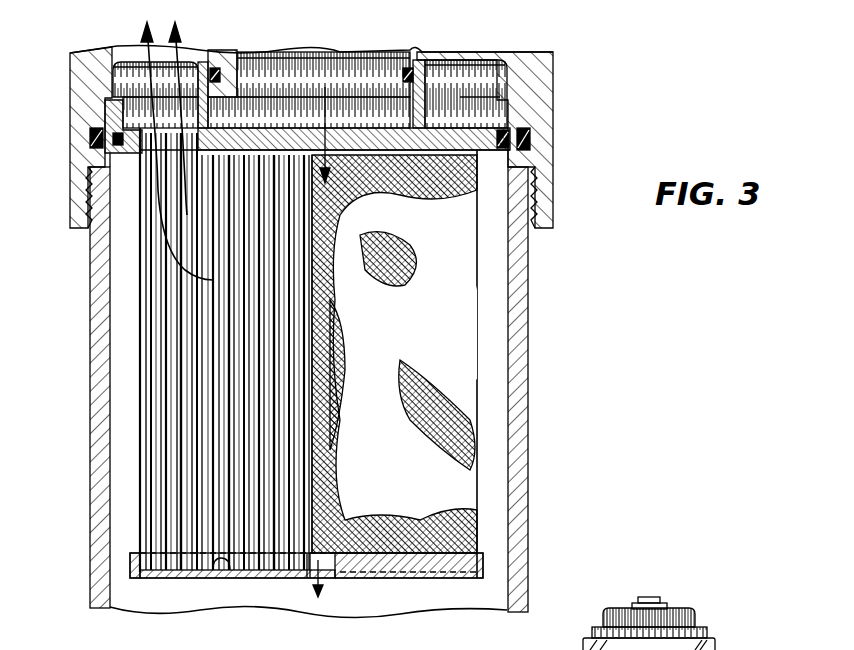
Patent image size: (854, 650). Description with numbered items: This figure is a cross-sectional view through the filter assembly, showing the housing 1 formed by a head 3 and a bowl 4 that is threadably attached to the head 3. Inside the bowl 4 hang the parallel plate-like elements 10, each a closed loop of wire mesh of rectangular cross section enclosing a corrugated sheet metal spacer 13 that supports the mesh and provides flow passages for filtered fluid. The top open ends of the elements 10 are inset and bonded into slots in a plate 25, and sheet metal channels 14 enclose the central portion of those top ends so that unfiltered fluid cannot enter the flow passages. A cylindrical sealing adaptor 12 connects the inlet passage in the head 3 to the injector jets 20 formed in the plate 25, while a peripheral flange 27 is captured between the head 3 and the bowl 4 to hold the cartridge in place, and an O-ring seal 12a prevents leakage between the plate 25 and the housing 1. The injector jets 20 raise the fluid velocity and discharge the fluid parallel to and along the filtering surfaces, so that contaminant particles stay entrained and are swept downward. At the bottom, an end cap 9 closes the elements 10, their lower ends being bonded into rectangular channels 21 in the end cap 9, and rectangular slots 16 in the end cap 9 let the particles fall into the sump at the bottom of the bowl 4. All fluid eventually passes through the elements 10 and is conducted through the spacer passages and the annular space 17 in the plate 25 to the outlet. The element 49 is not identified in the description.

The housing 1 is at (566, 128).
The head 3 is at (553, 59).
The bowl 4 is at (528, 379).
The end cap 9 is at (412, 572).
The plate-like element 10 is at (478, 308).
The cylindrical sealing adaptor 12 is at (428, 76).
The O-ring seal 12a is at (408, 72).
The corrugated sheet metal spacer 13 is at (155, 410).
The sheet metal channel 14 is at (272, 130).
The rectangular slot 16 is at (323, 570).
The annular space 17 is at (141, 118).
The injector jet 20 is at (337, 133).
The rectangular channel 21 is at (225, 568).
The plate 25 is at (463, 122).
The peripheral flange 27 is at (517, 103).
The valve assembly 49 is at (673, 614).